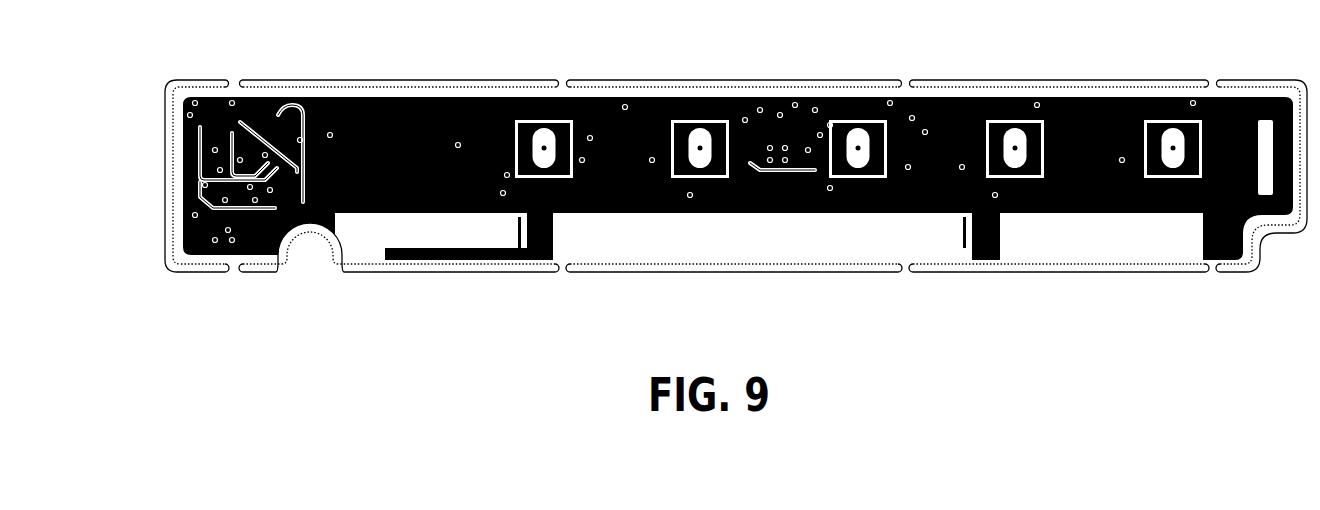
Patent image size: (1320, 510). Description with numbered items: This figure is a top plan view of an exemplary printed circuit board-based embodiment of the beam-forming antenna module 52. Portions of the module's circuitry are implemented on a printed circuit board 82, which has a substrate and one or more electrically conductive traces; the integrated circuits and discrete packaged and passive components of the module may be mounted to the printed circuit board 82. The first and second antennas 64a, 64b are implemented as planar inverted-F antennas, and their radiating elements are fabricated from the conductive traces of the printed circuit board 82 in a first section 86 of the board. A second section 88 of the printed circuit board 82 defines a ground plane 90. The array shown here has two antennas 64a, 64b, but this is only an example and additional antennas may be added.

The beam-forming antenna module 52 is at (150, 286).
The second section 88 is at (607, 112).
The printed circuit board 82 is at (731, 108).
The ground plane 90 is at (940, 201).
The first antenna 64a is at (460, 259).
The second antenna 64b is at (910, 261).
The first section 86 is at (705, 252).